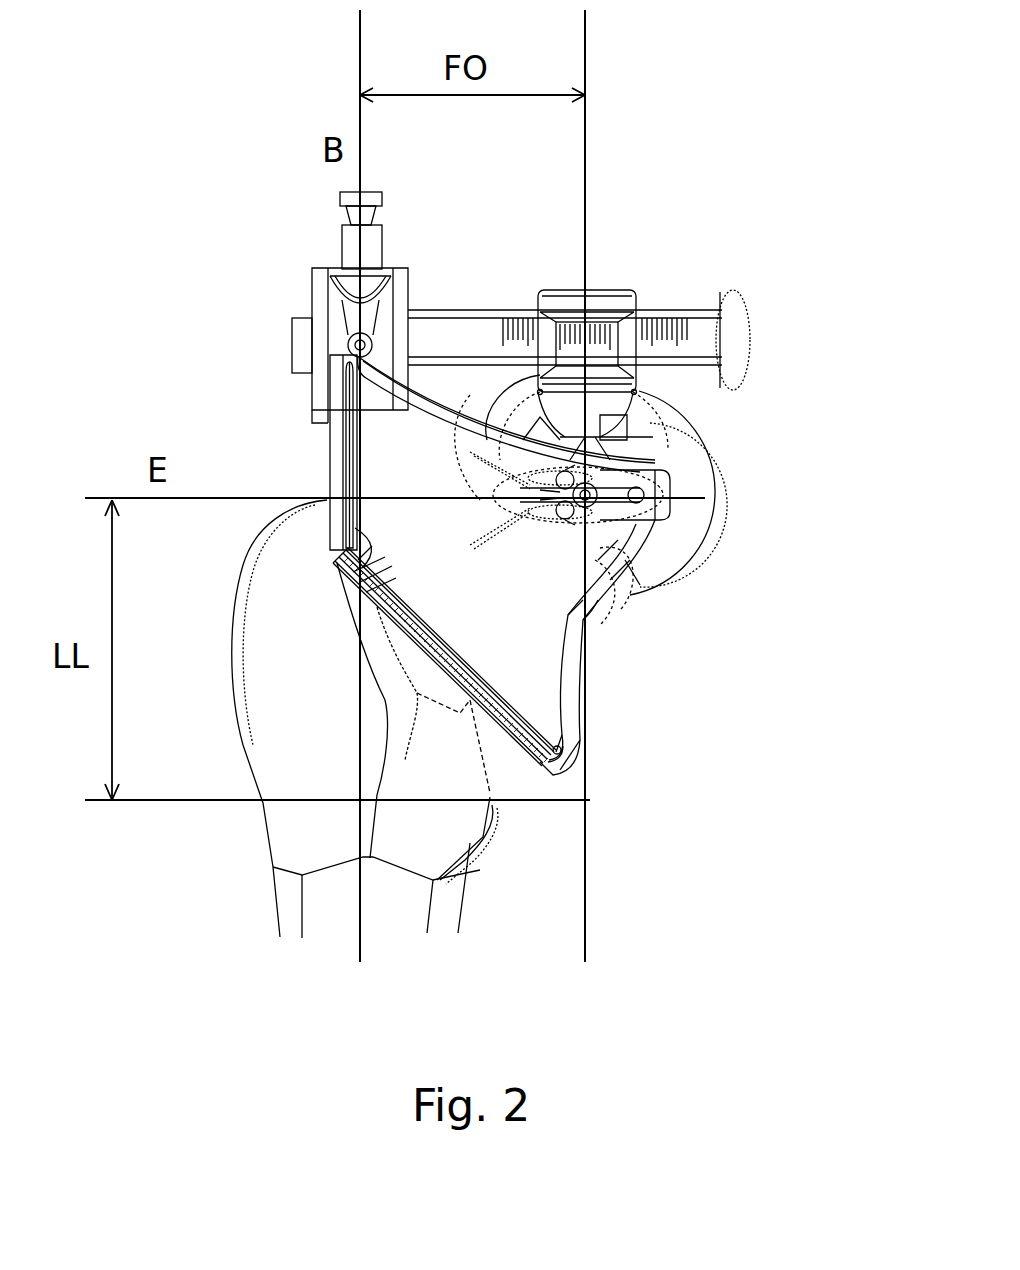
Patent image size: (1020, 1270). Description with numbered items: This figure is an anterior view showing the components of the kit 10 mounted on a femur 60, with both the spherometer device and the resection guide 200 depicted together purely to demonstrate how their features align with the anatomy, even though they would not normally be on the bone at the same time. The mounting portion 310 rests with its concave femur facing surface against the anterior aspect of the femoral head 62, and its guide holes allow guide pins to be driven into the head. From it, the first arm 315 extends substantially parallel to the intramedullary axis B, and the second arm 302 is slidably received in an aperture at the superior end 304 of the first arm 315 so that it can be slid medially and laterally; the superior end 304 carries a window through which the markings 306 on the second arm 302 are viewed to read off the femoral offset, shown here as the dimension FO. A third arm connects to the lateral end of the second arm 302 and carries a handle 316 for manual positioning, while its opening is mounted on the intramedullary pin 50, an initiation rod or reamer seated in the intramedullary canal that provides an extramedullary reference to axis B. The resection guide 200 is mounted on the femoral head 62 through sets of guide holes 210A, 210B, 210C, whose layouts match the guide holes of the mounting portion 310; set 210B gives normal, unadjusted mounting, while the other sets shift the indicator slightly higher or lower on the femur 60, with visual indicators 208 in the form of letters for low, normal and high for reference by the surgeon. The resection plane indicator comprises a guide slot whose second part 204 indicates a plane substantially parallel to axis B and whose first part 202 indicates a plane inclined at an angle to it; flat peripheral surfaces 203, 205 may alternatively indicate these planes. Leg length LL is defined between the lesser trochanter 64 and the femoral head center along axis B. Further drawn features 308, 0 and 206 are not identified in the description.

The kit 10 is at (723, 187).
The intramedullary pin 50 is at (380, 240).
The handle 316 is at (323, 302).
The second arm 302 is at (438, 343).
The superior end of the first arm 304 is at (562, 296).
The markings 306 is at (596, 325).
The knob 308 is at (657, 324).
The first arm 315 is at (595, 417).
The mounting portion 310 is at (640, 436).
The set of guide holes 210A is at (662, 474).
The set of guide holes 210B is at (668, 494).
The set of guide holes 210C is at (668, 515).
The femoral head 62 is at (697, 532).
The surface 205 is at (328, 452).
The second part of the guide slot 204 is at (350, 505).
The zero indicator 0 is at (347, 548).
The visual indicators 208 is at (412, 548).
The surface 203 is at (378, 612).
The first part of the guide slot 202 is at (440, 636).
The indicia 206 is at (554, 621).
The resection guide 200 is at (546, 690).
The femur 60 is at (535, 868).
The lesser trochanter 64 is at (490, 815).